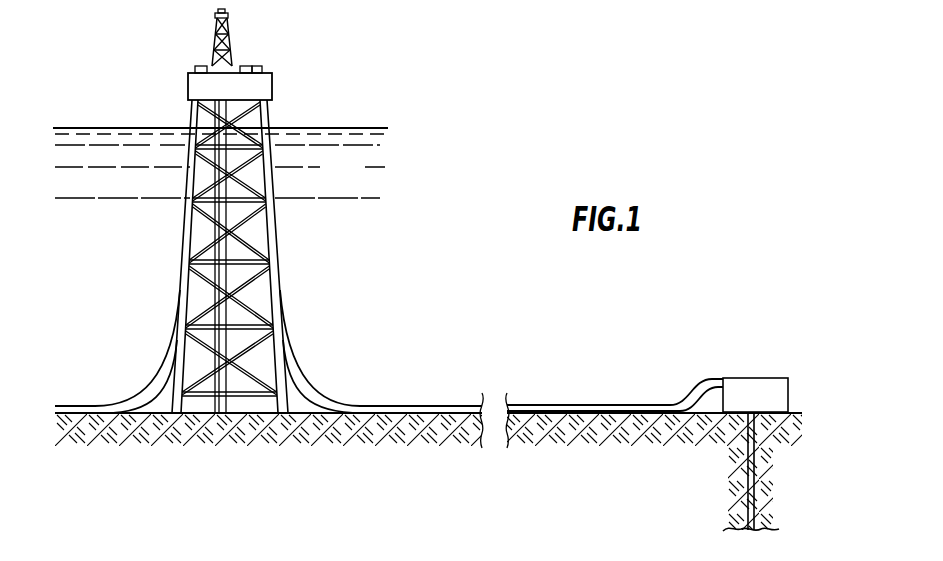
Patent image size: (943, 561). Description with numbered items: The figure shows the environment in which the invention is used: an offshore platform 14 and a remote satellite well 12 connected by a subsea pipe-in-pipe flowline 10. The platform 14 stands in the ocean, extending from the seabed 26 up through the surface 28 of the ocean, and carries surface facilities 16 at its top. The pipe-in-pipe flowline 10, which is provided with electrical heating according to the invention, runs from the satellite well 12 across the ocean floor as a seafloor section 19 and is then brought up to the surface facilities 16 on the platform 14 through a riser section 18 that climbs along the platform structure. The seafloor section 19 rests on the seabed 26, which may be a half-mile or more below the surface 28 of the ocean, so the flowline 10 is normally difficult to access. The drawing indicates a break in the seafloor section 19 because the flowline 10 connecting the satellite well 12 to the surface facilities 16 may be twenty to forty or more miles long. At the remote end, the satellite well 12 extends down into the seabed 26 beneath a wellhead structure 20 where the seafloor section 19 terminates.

The subsea pipe-in-pipe flowline 10 is at (268, 206).
The remote satellite well 12 is at (745, 497).
The platform 14 is at (286, 83).
The surface facilities 16 is at (266, 63).
The riser section 18 is at (285, 272).
The seafloor section 19 is at (587, 403).
The subsea wellhead 20 is at (748, 378).
The seabed 26 is at (133, 405).
The surface of the ocean 28 is at (78, 127).